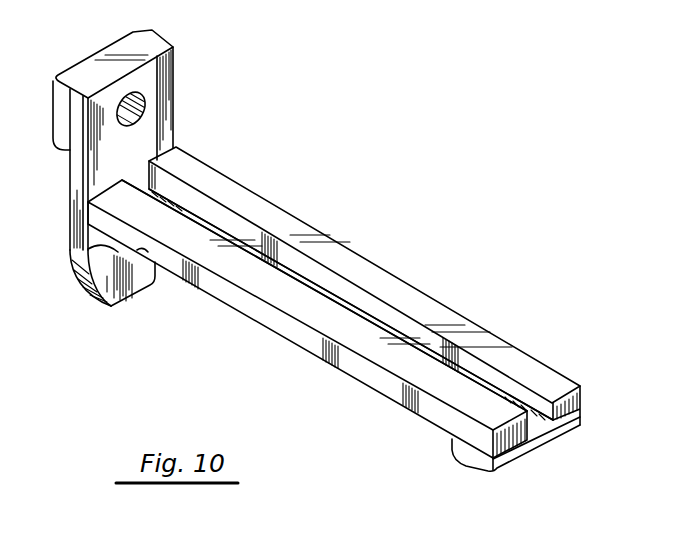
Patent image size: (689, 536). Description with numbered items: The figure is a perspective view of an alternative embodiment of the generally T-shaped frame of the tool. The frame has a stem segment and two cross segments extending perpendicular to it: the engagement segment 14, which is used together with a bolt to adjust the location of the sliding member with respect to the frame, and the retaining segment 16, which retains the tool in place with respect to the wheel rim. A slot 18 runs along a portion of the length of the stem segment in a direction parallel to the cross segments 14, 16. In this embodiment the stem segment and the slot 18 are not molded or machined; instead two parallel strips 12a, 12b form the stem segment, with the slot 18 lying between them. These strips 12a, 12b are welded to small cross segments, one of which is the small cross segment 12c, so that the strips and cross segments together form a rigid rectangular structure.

The engagement segment 14 is at (157, 88).
The retaining segment 16 is at (142, 277).
The slot 18 is at (340, 293).
The parallel strip 12a is at (340, 327).
The parallel strip 12b is at (402, 298).
The small cross segment 12c is at (477, 456).